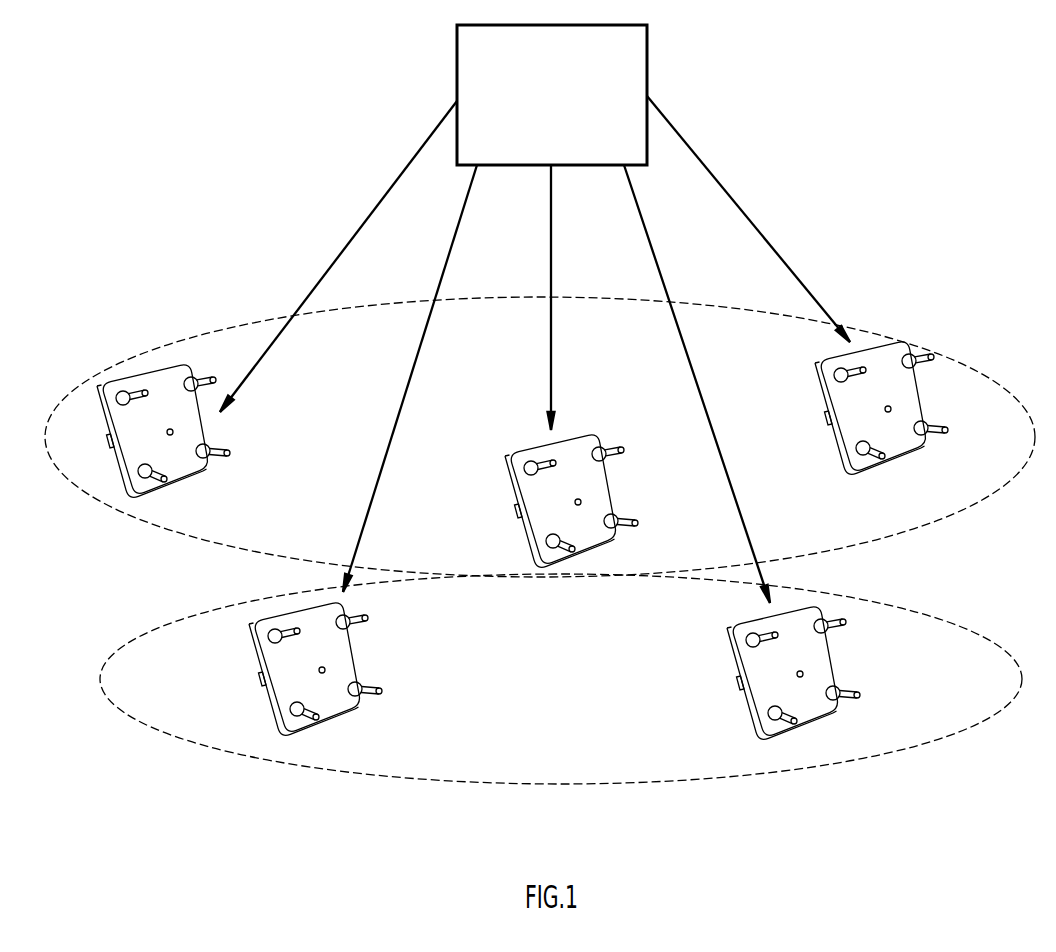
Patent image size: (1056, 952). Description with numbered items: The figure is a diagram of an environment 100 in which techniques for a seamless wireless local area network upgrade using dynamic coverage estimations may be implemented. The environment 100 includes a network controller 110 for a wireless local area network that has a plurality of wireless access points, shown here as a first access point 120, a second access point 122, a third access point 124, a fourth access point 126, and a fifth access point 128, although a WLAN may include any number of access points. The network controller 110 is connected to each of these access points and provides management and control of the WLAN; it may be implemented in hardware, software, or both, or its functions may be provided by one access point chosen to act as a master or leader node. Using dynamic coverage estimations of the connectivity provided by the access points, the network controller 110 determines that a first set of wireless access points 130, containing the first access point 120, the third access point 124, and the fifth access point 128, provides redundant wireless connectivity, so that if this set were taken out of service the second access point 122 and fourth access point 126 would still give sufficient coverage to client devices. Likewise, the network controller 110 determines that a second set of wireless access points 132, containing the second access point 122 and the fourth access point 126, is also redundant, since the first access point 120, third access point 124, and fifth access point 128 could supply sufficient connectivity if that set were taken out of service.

The environment 100 is at (190, 173).
The network controller 110 is at (647, 66).
The first access point 120 is at (190, 473).
The second access point 122 is at (363, 653).
The third access point 124 is at (620, 483).
The fourth access point 126 is at (842, 660).
The fifth access point 128 is at (928, 392).
The first set of wireless access points 130 is at (976, 366).
The second set of wireless access points 132 is at (947, 623).